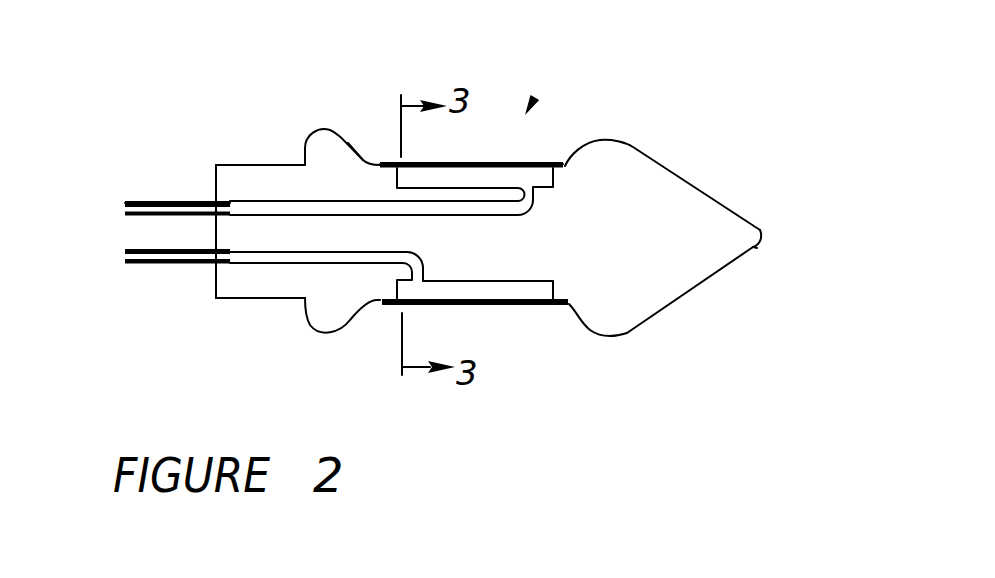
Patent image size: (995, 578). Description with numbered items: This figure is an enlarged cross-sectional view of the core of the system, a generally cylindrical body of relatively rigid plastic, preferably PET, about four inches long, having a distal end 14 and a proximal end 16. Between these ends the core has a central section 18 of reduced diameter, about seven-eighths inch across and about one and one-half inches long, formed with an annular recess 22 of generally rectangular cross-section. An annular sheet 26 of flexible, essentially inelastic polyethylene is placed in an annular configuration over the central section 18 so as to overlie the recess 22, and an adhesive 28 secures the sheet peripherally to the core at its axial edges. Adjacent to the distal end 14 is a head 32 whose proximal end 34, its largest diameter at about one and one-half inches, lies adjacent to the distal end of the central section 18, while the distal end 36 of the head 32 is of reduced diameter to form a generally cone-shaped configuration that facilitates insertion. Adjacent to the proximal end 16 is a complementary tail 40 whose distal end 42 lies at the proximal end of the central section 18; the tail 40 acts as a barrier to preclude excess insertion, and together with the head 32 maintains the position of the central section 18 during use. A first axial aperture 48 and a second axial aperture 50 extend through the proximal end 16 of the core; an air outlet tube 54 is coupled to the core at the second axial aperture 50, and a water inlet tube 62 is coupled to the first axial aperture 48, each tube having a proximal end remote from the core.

The distal end of the core 14 is at (762, 230).
The proximal end of the core 16 is at (215, 197).
The central section 18 is at (532, 103).
The annular recess 22 is at (472, 188).
The annular sheet 26 is at (533, 163).
The adhesive 28 is at (562, 163).
The head 32 is at (638, 192).
The proximal end of the head 34 is at (573, 304).
The distal end of the head 36 is at (757, 248).
The tail 40 is at (318, 143).
The distal end of the tail 42 is at (348, 143).
The first axial aperture 48 is at (210, 202).
The second axial aperture 50 is at (210, 267).
The air outlet tube 54 is at (153, 200).
The water inlet tube 62 is at (140, 265).